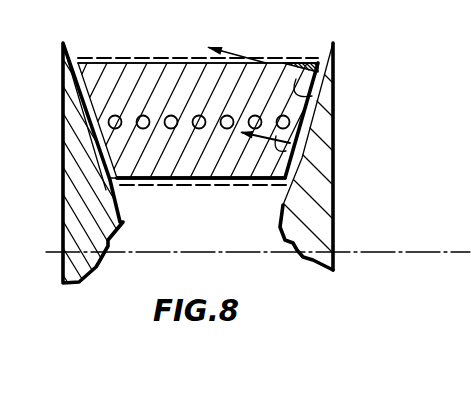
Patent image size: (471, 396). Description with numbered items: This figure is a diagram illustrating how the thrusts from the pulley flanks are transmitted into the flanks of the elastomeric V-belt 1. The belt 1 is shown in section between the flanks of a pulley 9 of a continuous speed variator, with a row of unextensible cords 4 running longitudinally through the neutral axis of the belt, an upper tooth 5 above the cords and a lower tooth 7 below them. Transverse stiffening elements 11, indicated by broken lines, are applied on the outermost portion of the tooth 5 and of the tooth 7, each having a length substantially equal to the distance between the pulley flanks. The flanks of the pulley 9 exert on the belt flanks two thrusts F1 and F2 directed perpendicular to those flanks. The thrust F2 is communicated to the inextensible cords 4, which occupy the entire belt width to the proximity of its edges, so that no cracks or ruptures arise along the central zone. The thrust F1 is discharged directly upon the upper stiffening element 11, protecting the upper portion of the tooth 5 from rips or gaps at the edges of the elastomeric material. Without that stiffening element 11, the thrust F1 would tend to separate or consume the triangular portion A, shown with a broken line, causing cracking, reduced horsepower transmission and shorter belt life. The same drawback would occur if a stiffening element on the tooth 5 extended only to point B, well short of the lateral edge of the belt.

The V-belt 1 is at (165, 170).
The unextensible cords 4 is at (144, 115).
The teeth 5 is at (148, 67).
The teeth 7 is at (208, 181).
The pulley 9 is at (322, 139).
The stiffening elements 11 is at (120, 58).
The triangular portion A is at (311, 63).
The point B is at (265, 63).
The thrust F1 is at (312, 96).
The thrust F2 is at (286, 151).